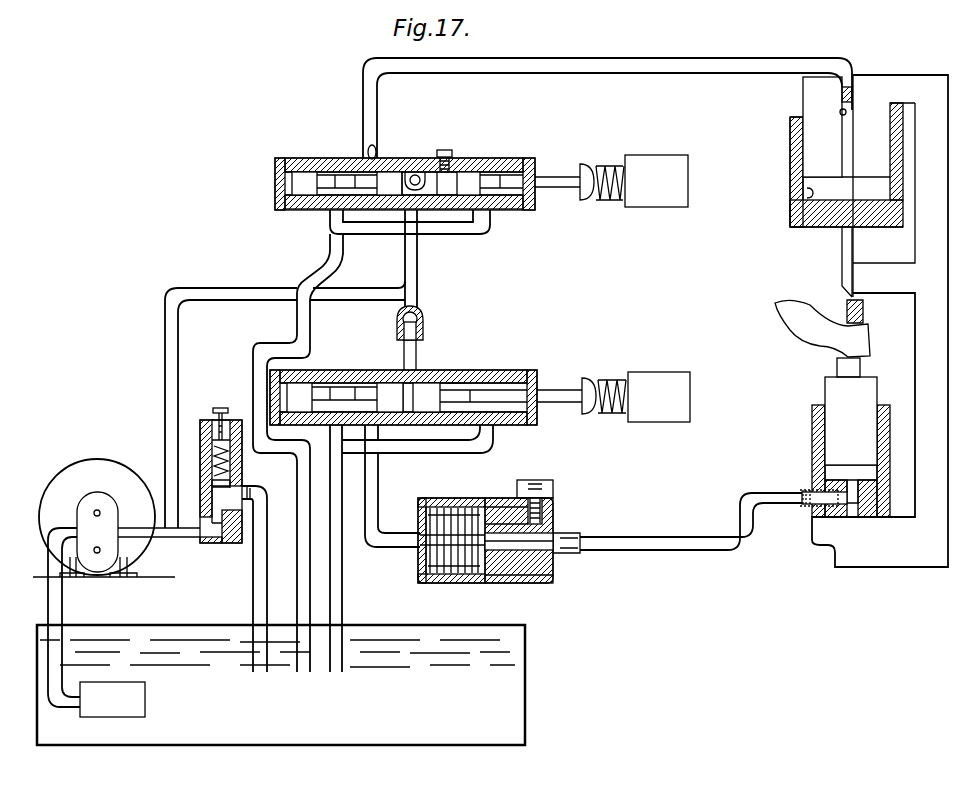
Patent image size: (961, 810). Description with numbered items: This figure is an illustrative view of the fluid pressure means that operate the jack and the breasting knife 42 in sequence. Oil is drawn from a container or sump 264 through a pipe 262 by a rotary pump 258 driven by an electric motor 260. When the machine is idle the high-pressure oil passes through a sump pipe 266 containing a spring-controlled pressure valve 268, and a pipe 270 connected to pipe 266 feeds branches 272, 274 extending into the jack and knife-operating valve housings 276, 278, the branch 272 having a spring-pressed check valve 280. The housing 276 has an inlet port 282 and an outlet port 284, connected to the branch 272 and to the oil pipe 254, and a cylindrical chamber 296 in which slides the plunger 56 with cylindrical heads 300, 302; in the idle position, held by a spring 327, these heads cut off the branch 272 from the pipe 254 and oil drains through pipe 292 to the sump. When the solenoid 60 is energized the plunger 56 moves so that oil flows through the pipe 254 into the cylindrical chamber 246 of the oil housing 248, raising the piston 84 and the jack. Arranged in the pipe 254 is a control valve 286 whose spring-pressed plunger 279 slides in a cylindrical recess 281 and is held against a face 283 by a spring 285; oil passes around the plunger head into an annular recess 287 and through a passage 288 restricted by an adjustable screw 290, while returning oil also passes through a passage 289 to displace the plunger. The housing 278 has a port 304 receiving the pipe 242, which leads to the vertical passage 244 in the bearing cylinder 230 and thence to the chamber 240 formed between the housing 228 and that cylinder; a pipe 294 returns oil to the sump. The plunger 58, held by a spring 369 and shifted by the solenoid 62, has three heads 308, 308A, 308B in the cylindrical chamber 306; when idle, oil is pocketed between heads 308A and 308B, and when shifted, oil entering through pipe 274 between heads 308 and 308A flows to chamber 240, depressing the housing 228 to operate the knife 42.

The breasting knife 42 is at (842, 247).
The valve or plunger 56 is at (472, 396).
The valve or plunger 58 is at (506, 173).
The solenoid 60 is at (640, 366).
The solenoid 62 is at (634, 148).
The piston 84 is at (862, 394).
The housing 228 is at (908, 213).
The bearing cylinder 230 is at (878, 140).
The chamber 240 is at (795, 200).
The vertical passage 244 is at (845, 116).
The pipe 242 is at (363, 120).
The cylindrical chamber 246 is at (880, 425).
The oil housing 248 is at (887, 485).
The oil pipe 254 is at (378, 527).
The rotary pump 258 is at (83, 502).
The electric motor 260 is at (72, 462).
The pipe 262 is at (62, 606).
The container or sump 264 is at (528, 673).
The sump pipe 266 is at (250, 560).
The spring-controlled pressure valve 268 is at (225, 505).
The pipe 270 is at (165, 318).
The branch 272 is at (418, 352).
The branch 274 is at (418, 272).
The valve or plunger housing 276 is at (530, 370).
The valve or plunger housing 278 is at (499, 212).
The spring-pressed plunger 279 is at (448, 583).
The spring-pressed check valve 280 is at (416, 314).
The cylindrical recess 281 is at (438, 530).
The inlet port 282 is at (403, 362).
The face 283 is at (462, 540).
The outlet port 284 is at (388, 449).
The spring 285 is at (418, 576).
The control valve 286 is at (479, 585).
The annular recess 287 is at (505, 587).
The passage 288 is at (503, 505).
The passage 289 is at (549, 579).
The screw 290 is at (542, 482).
The pipe 292 is at (341, 575).
The pipe 294 is at (303, 565).
The cylindrical chamber 296 is at (459, 383).
The cylindrical head 300 is at (300, 392).
The cylindrical head 302 is at (388, 392).
The port 304 is at (376, 150).
The cylindrical chamber 306 is at (415, 167).
The cylindrical head 308 is at (299, 175).
The cylindrical head 308A is at (390, 193).
The cylindrical head 308B is at (460, 173).
The spring 327 is at (607, 165).
The spring 369 is at (604, 378).